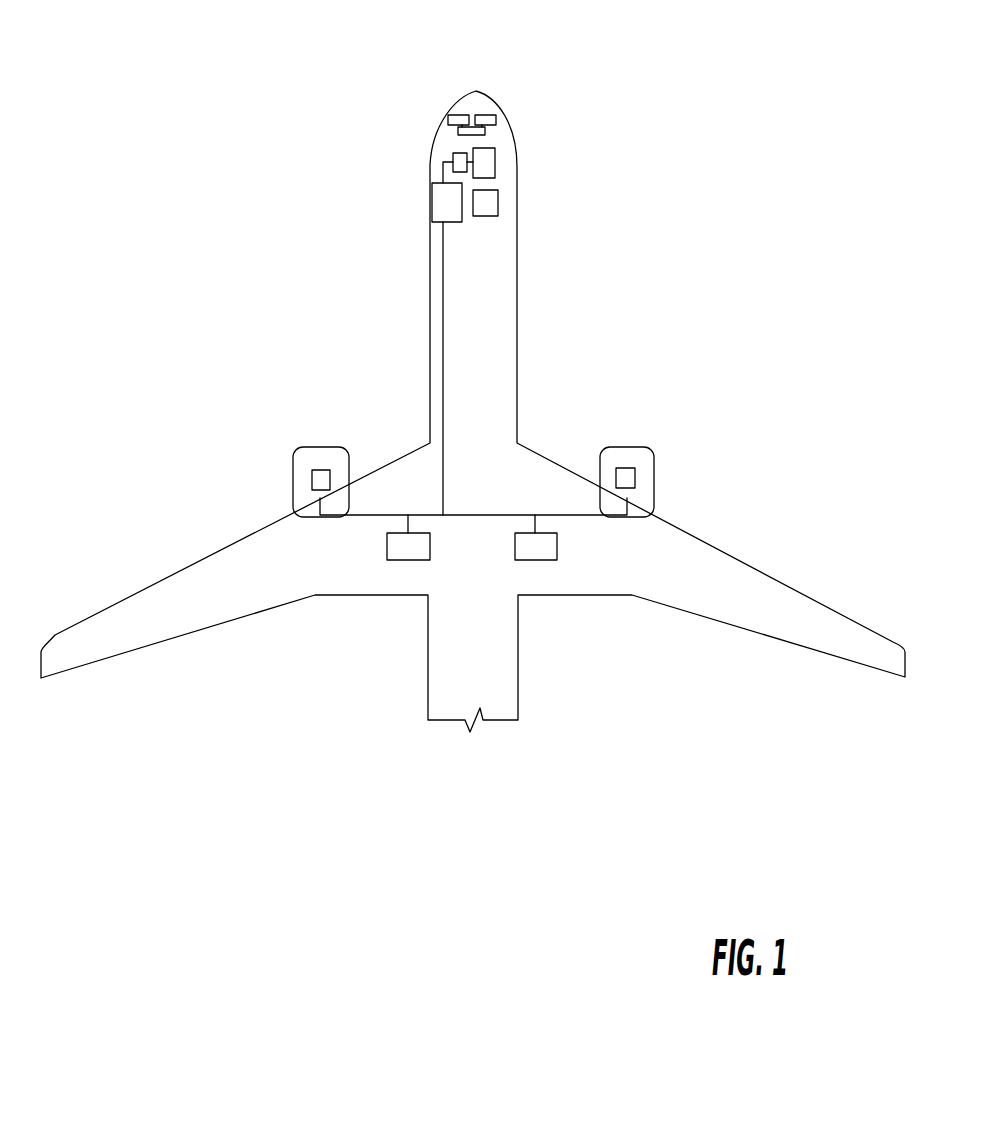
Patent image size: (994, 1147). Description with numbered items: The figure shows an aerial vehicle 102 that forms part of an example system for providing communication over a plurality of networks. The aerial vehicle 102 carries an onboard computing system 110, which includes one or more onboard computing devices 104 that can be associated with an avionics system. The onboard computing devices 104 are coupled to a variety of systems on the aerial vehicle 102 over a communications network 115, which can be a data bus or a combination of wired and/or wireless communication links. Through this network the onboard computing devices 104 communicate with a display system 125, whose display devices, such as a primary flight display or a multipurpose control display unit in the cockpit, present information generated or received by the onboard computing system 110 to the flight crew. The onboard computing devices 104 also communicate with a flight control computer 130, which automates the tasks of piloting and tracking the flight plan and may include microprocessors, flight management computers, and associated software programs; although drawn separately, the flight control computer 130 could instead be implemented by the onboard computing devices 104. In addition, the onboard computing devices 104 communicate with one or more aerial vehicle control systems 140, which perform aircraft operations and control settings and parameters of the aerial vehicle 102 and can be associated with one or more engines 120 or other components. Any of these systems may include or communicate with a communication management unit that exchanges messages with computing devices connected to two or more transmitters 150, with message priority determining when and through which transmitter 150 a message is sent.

The onboard computing system 110 is at (632, 90).
The aerial vehicle 102 is at (495, 312).
The onboard computing device 104 is at (432, 209).
The communications network 115 is at (443, 348).
The engine 120 is at (325, 447).
The display system 125 is at (481, 150).
The flight control computer 130 is at (455, 152).
The aerial vehicle control system 140 is at (500, 205).
The transmitter 150 is at (483, 115).